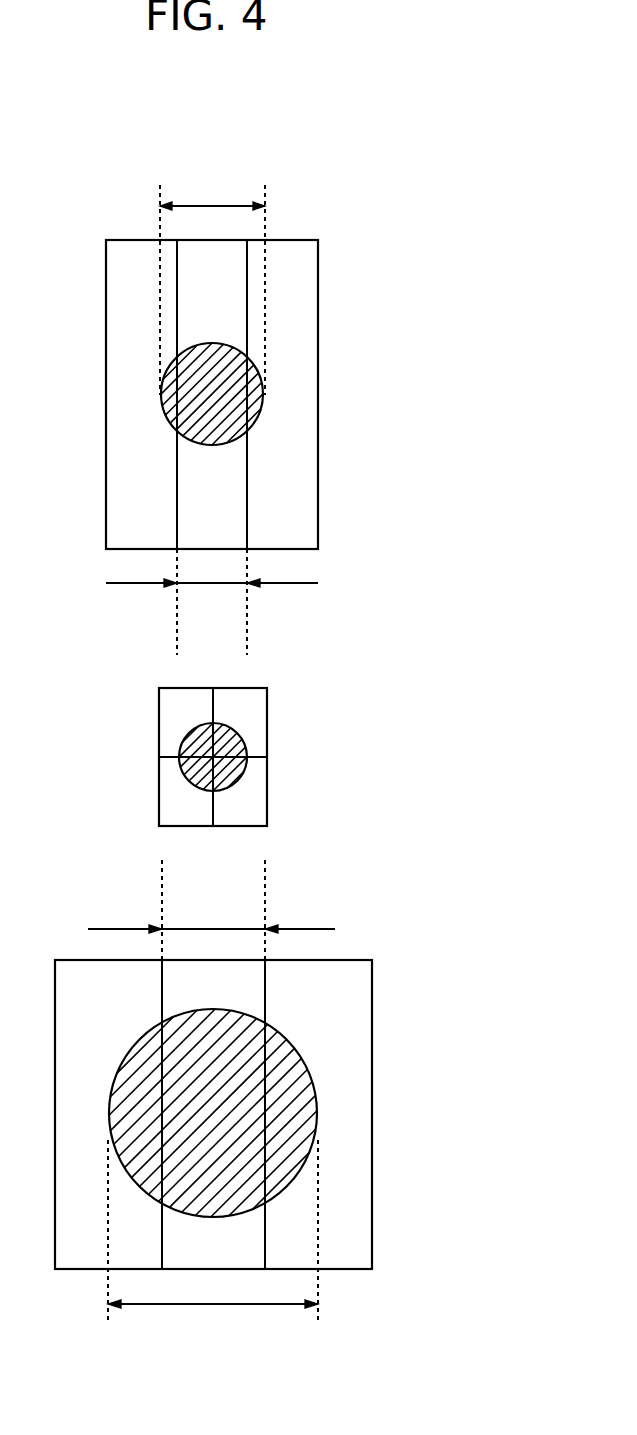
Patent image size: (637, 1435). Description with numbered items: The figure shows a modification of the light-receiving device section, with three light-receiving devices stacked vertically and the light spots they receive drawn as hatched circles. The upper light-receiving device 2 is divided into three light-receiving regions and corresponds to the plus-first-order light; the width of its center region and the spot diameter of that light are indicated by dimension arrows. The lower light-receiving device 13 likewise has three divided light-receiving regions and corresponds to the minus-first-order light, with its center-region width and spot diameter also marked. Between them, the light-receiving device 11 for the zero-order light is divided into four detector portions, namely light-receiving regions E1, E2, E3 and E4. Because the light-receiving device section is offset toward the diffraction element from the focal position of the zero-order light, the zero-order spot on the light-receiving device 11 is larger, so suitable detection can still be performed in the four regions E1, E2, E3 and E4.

The light-receiving device 2 is at (330, 427).
The light-receiving device 11 is at (241, 757).
The light-receiving device 13 is at (387, 1118).
The light-receiving region E1 is at (180, 706).
The light-receiving region E2 is at (247, 706).
The light-receiving region E3 is at (247, 808).
The light-receiving region E4 is at (180, 808).